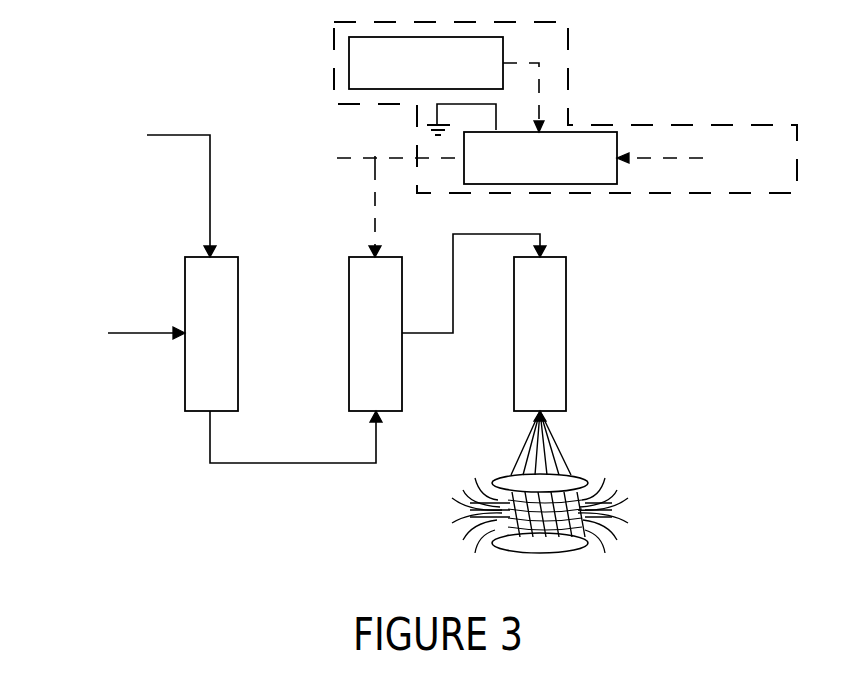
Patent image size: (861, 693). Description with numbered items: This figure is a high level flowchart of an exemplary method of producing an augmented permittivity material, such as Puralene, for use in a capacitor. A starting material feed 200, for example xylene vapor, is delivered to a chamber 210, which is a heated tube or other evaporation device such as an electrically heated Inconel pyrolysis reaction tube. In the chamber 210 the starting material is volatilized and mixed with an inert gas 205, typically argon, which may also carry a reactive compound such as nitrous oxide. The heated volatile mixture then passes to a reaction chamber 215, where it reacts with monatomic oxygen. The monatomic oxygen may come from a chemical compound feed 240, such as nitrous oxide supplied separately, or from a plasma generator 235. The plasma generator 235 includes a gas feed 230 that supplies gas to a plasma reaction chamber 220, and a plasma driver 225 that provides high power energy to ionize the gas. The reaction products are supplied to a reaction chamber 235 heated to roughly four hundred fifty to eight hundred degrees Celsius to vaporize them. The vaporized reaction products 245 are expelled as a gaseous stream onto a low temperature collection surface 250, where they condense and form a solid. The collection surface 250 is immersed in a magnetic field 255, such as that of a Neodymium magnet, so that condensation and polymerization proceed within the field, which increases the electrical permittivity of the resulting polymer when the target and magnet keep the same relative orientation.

The starting material feed 200 is at (140, 191).
The inert gas 205 is at (107, 344).
The chamber 210 is at (283, 360).
The reaction chamber 215 is at (447, 322).
The plasma reaction chamber 220 is at (522, 123).
The plasma driver 225 is at (426, 63).
The gas feed 230 is at (701, 169).
The plasma generator / reaction chamber 235 is at (686, 86).
The monatomic oxygen chemical compound feed 240 is at (354, 202).
The vaporized reaction products 245 is at (553, 445).
The collection surface 250 is at (553, 483).
The magnetic field 255 is at (607, 513).